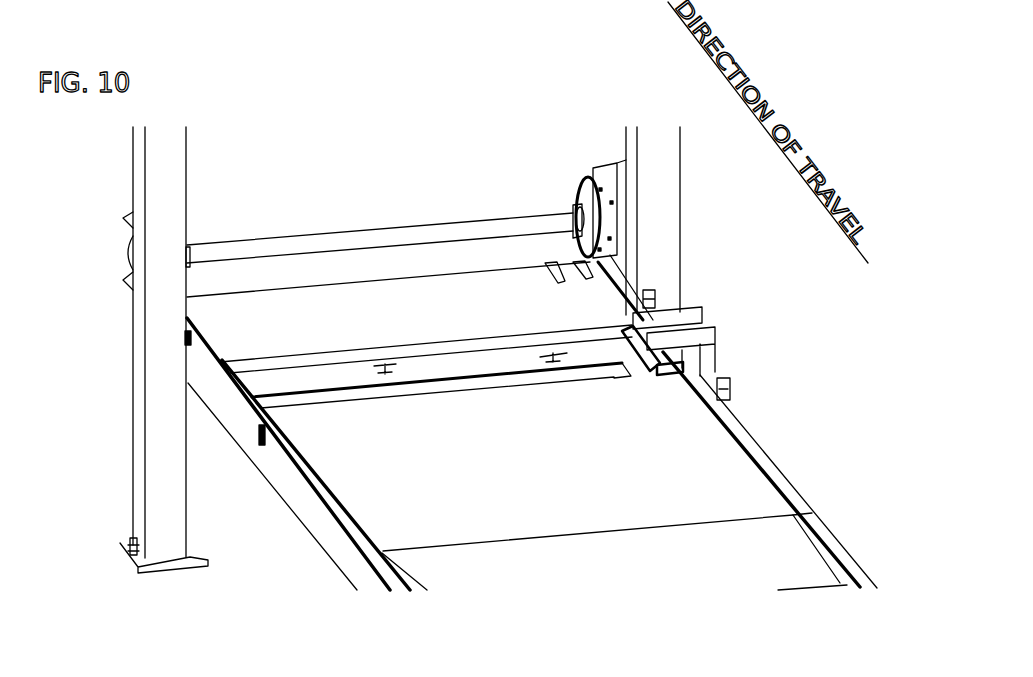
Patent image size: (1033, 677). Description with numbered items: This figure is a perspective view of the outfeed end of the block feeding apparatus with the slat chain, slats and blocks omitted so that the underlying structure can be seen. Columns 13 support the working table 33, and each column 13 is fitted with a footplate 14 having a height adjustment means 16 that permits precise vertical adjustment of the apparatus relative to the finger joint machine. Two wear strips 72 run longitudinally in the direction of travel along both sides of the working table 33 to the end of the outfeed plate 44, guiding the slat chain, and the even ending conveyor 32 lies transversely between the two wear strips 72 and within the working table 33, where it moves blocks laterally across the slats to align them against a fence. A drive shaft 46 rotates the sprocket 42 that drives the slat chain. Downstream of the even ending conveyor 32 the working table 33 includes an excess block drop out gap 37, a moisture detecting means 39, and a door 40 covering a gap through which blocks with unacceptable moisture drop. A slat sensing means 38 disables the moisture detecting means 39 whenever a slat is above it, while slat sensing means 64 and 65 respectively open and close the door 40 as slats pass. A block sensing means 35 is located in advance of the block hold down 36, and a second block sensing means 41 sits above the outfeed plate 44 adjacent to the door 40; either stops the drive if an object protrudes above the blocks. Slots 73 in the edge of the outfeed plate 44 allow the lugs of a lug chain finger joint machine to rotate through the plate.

The column 13 is at (681, 218).
The footplate 14 is at (133, 577).
The height adjustment means 16 is at (123, 555).
The even ending conveyor 32 is at (620, 584).
The working table 33 is at (550, 504).
The block sensing means 35 is at (258, 430).
The block hold down 36 is at (675, 380).
The excess block drop out gap 37 is at (378, 397).
The slat sensing means 38 is at (250, 382).
The moisture detecting means 39 is at (617, 348).
The door 40 is at (318, 356).
The block sensing means 41 is at (185, 338).
The sprocket 42 is at (575, 182).
The outfeed plate 44 is at (410, 311).
The drive shaft 46 is at (372, 225).
The slat sensing means 64 is at (292, 431).
The slat sensing means 65 is at (278, 416).
The wear strip 72 is at (343, 523).
The slot 73 is at (575, 262).